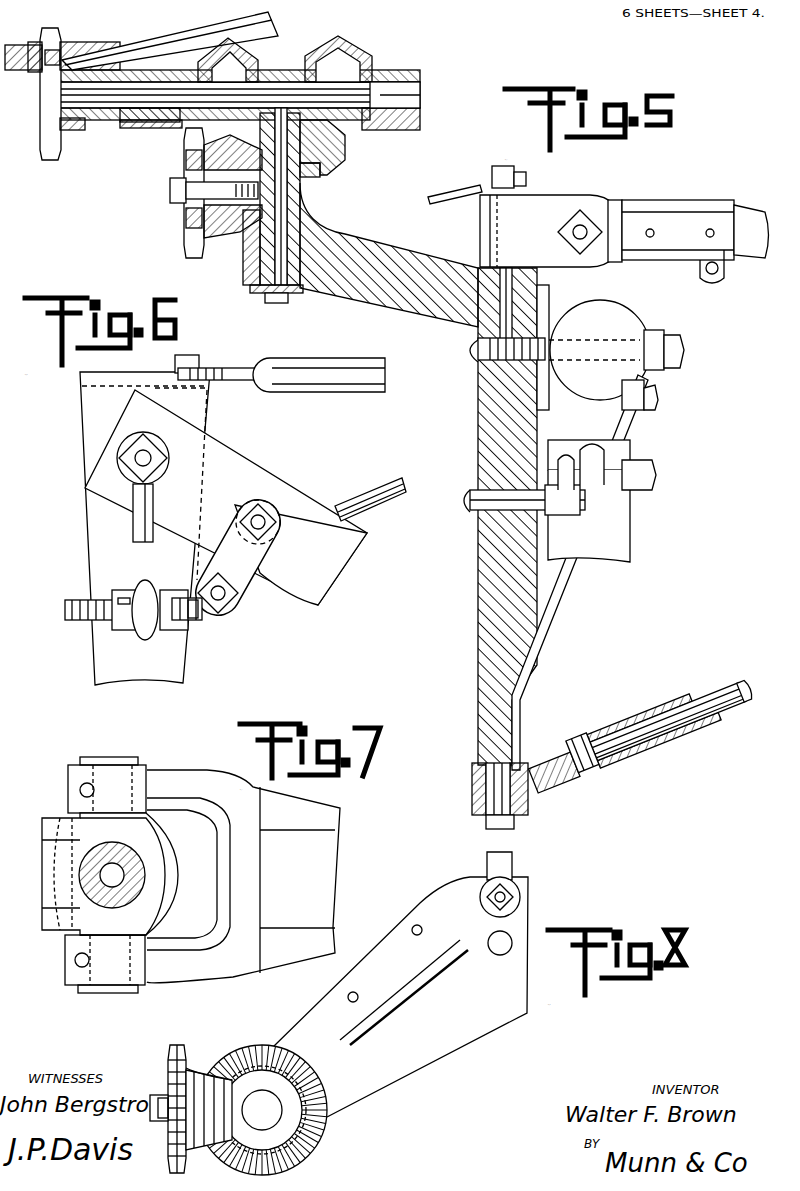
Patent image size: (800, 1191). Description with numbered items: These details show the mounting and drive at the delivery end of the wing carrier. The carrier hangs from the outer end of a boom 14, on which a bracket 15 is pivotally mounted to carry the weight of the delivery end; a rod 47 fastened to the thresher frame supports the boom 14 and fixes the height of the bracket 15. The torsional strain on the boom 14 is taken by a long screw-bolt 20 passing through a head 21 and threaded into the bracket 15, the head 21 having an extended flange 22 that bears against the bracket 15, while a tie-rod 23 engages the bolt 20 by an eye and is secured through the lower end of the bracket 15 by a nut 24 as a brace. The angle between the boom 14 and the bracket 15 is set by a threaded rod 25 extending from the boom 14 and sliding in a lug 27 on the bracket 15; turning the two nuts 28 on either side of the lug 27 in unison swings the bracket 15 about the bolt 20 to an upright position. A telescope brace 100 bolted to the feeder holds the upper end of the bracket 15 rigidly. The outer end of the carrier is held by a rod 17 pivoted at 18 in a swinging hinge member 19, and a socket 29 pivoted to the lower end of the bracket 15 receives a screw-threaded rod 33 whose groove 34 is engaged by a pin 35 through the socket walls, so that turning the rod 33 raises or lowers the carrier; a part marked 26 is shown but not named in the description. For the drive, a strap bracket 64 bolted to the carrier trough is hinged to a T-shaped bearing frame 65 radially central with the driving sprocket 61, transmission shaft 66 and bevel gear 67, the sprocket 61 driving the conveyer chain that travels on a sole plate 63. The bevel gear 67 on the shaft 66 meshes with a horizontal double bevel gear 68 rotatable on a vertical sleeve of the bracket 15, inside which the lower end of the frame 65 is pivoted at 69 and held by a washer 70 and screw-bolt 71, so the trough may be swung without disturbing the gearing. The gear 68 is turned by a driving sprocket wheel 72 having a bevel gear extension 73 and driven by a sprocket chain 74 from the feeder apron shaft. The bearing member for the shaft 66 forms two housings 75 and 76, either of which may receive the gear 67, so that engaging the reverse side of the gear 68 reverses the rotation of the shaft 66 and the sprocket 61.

In FIG. 5, the boom 14 is at (630, 530).
In FIG. 6, the boom 14 is at (345, 550).
In FIG. 5, the bracket 15 is at (400, 312).
In FIG. 6, the bracket 15 is at (137, 682).
In FIG. 8, the bracket 15 is at (450, 1050).
In FIG. 5, the rod 17 is at (750, 212).
In FIG. 5, the pivot 18 is at (590, 225).
In FIG. 5, the swinging hinge member 19 is at (539, 180).
In FIG. 5, the screw-bolt 20 is at (684, 352).
In FIG. 6, the screw-bolt 20 is at (118, 455).
In FIG. 5, the head 21 is at (622, 318).
In FIG. 6, the head 21 is at (190, 432).
In FIG. 5, the flange 22 is at (549, 292).
In FIG. 5, the tie-rod 23 is at (565, 578).
In FIG. 6, the tie-rod 23 is at (133, 508).
In FIG. 5, the nut 24 is at (514, 824).
In FIG. 5, the rod 25 is at (566, 455).
In FIG. 6, the rod 25 is at (200, 616).
In FIG. 5, the link nut 26 is at (648, 455).
In FIG. 6, the link nut 26 is at (245, 578).
In FIG. 5, the lug 27 is at (480, 478).
In FIG. 6, the lug 27 is at (135, 585).
In FIG. 6, the nuts 28 is at (125, 630).
In FIG. 5, the socket 29 is at (635, 723).
In FIG. 5, the screw-threaded rod 33 is at (737, 712).
In FIG. 5, the groove 34 is at (610, 757).
In FIG. 5, the pin 35 is at (587, 743).
In FIG. 6, the rod 47 is at (368, 488).
In FIG. 5, the driving sprocket wheel 61 is at (40, 135).
In FIG. 5, the sole plate 63 is at (25, 42).
In FIG. 5, the strap bracket 64 is at (160, 128).
In FIG. 5, the T-shaped bearing frame 65 is at (100, 120).
In FIG. 5, the transmission shaft 66 is at (420, 98).
In FIG. 5, the bevel gear 67 is at (248, 55).
In FIG. 5, the double bevel gear 68 is at (345, 148).
In FIG. 8, the double bevel gear 68 is at (305, 1153).
In FIG. 5, the pivotal mounting 69 is at (302, 200).
In FIG. 8, the pivotal mounting 69 is at (278, 1118).
In FIG. 5, the washer 70 is at (298, 290).
In FIG. 5, the screw-bolt 71 is at (275, 311).
In FIG. 5, the driving sprocket wheel 72 is at (184, 225).
In FIG. 8, the driving sprocket wheel 72 is at (168, 1060).
In FIG. 5, the bevel gear extension 73 is at (218, 232).
In FIG. 8, the bevel gear extension 73 is at (200, 1065).
In FIG. 8, the sprocket chain 74 is at (183, 1047).
In FIG. 5, the housing 75 is at (218, 30).
In FIG. 5, the housing 76 is at (362, 52).
In FIG. 8, the telescope brace 100 is at (512, 862).